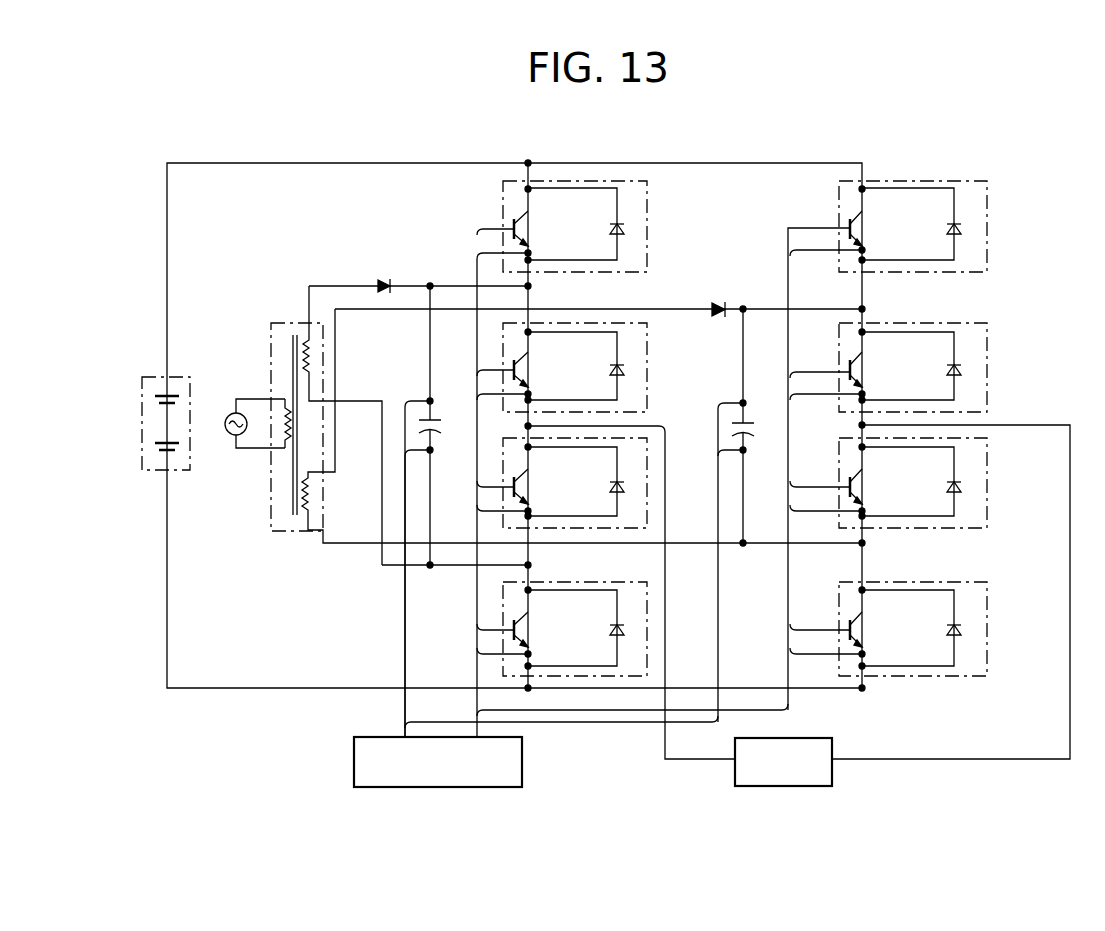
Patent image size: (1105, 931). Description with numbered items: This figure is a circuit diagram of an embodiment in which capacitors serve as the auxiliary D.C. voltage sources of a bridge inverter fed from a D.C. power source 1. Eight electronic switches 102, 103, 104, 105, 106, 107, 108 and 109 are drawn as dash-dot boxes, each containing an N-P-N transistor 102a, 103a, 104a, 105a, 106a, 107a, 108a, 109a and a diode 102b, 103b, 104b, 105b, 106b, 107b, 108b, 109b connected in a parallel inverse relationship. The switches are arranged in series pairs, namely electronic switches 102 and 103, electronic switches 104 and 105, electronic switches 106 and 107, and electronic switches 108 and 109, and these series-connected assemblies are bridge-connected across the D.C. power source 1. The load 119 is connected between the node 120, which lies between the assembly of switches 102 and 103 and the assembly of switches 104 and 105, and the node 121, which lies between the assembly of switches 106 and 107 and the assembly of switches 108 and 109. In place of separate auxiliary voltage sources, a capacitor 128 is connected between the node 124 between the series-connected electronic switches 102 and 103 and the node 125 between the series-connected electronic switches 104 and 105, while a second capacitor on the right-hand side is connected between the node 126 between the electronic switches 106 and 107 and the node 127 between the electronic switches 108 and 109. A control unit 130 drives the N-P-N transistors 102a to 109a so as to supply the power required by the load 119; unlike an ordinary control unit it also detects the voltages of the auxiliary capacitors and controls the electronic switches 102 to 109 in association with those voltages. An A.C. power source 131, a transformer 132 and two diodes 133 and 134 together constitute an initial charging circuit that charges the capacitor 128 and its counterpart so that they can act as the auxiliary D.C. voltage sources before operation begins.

The DC power source (battery) 1 is at (142, 390).
The electronic switch 102 is at (503, 205).
The N-P-N transistor 102a is at (531, 224).
The diode 102b is at (610, 229).
The electronic switch 103 is at (647, 340).
The N-P-N transistor 103a is at (531, 365).
The diode 103b is at (610, 370).
The electronic switch 104 is at (647, 452).
The N-P-N transistor 104a is at (531, 482).
The diode 104b is at (610, 487).
The electronic switch 105 is at (647, 598).
The N-P-N transistor 105a is at (531, 625).
The diode 105b is at (610, 630).
The electronic switch 106 is at (987, 213).
The N-P-N transistor 106a is at (866, 224).
The diode 106b is at (947, 229).
The electronic switch 107 is at (987, 356).
The N-P-N transistor 107a is at (866, 365).
The diode 107b is at (947, 370).
The electronic switch 108 is at (987, 470).
The N-P-N transistor 108a is at (866, 482).
The diode 108b is at (947, 487).
The electronic switch 109 is at (987, 612).
The N-P-N transistor 109a is at (866, 625).
The diode 109b is at (947, 630).
The load 119 is at (832, 772).
The node 120 is at (500, 426).
The node 121 is at (862, 425).
The node 124 is at (532, 287).
The node 125 is at (532, 565).
The node 126 is at (866, 309).
The node 127 is at (866, 544).
The capacitor 128 is at (440, 428).
The control unit 130 is at (522, 758).
The A.C. power source 131 is at (231, 436).
The transformer 132 is at (271, 531).
The diode 133 is at (385, 278).
The diode 134 is at (720, 302).